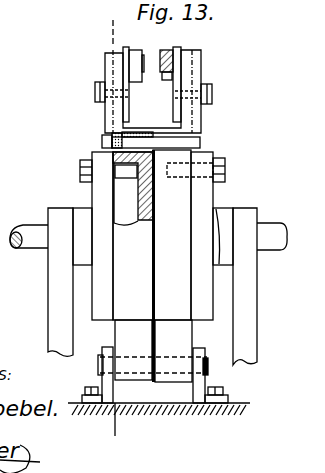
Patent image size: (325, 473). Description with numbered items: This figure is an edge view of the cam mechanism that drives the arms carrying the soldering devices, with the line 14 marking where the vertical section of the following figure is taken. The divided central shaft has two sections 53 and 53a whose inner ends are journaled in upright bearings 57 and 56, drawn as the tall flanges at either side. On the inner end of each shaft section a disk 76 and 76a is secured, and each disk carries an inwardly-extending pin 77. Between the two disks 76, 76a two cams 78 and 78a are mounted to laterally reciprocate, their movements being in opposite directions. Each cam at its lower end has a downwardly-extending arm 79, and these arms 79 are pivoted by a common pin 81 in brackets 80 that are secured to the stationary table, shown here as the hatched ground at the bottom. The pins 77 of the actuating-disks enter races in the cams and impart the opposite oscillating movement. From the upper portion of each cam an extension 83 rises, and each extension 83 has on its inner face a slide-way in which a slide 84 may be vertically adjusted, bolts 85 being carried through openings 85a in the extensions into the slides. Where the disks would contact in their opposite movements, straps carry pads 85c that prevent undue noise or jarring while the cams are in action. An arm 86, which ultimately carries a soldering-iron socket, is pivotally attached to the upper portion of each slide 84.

The section line 14 14 is at (111, 226).
The central shaft section 53 is at (25, 228).
The central shaft section 53a is at (280, 224).
The upright bearing 56 is at (245, 292).
The upright bearing 57 is at (57, 295).
The disk 76 is at (96, 236).
The disk 76a is at (219, 258).
The pin 77 is at (128, 171).
The cam 78 is at (133, 266).
The cam 78a is at (183, 235).
The downwardly-extending arm 79 is at (153, 351).
The bracket 80 is at (203, 381).
The common pin 81 is at (100, 363).
The extension 83 is at (198, 80).
The slide 84 is at (125, 112).
The bolt 85 is at (95, 90).
The opening 85a is at (156, 142).
The pad 85c is at (103, 144).
The arm 86 is at (162, 54).